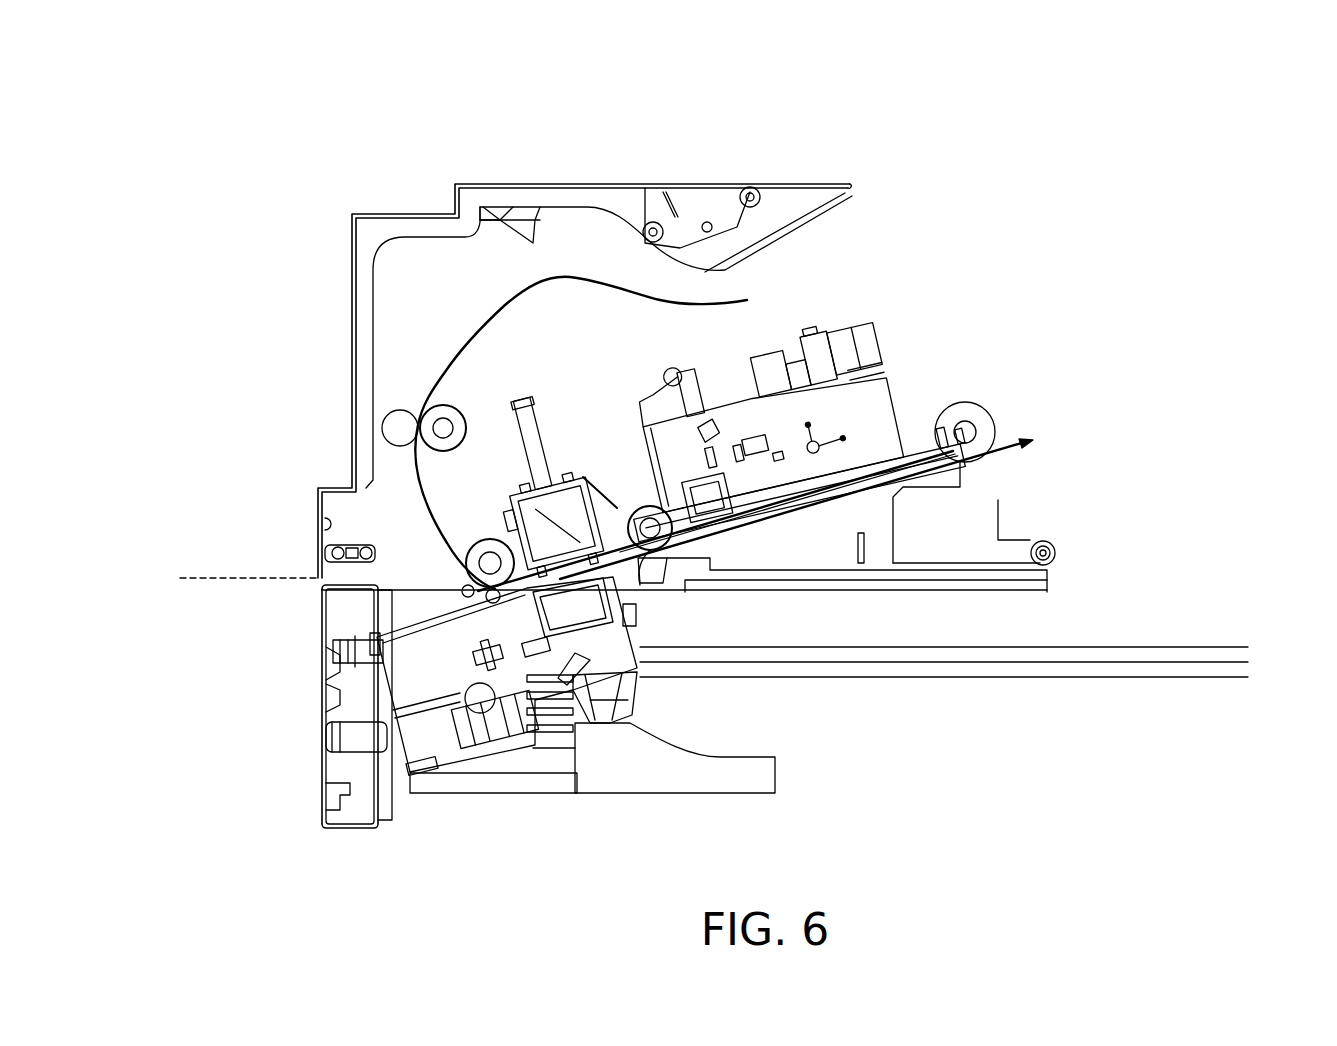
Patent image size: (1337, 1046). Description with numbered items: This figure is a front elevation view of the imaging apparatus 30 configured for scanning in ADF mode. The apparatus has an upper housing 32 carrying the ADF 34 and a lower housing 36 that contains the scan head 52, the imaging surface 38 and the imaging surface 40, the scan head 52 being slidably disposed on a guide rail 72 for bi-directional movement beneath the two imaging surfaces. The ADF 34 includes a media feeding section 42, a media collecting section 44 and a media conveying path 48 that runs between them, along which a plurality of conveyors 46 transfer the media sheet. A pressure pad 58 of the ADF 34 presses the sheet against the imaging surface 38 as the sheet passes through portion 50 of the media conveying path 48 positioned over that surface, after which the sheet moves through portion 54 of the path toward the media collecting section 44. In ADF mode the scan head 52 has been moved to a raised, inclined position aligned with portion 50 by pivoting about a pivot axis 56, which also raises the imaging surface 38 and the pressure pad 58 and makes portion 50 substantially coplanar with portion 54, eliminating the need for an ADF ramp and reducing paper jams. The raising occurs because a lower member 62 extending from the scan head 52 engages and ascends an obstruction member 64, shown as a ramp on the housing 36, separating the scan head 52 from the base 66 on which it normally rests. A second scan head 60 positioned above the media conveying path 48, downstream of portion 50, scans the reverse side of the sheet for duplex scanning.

The imaging apparatus 30 is at (983, 145).
The housing 32 is at (383, 213).
The ADF 34 is at (338, 401).
The housing 36 is at (322, 596).
The imaging surface 38 is at (630, 618).
The imaging surface 40 is at (1060, 592).
The media feeding section 42 is at (856, 236).
The media collecting section 44 is at (1050, 430).
The conveyors 46 is at (447, 427).
The media conveying path 48 is at (498, 316).
The portion of the media conveying path 50 is at (550, 567).
The scan head 52 is at (403, 678).
The portion of the media conveying path 54 is at (733, 523).
The pivot axis 56 is at (478, 698).
The pressure pad 58 is at (580, 480).
The second scan head 60 is at (868, 406).
The lower member 62 is at (594, 690).
The obstruction member 64 is at (722, 795).
The base 66 is at (527, 795).
The guide rail 72 is at (840, 663).